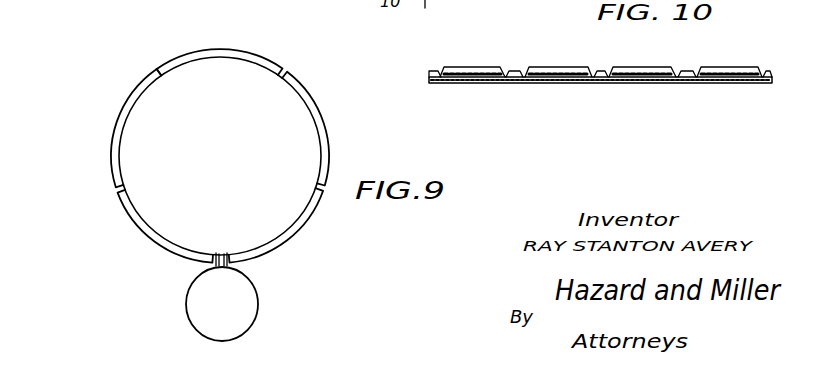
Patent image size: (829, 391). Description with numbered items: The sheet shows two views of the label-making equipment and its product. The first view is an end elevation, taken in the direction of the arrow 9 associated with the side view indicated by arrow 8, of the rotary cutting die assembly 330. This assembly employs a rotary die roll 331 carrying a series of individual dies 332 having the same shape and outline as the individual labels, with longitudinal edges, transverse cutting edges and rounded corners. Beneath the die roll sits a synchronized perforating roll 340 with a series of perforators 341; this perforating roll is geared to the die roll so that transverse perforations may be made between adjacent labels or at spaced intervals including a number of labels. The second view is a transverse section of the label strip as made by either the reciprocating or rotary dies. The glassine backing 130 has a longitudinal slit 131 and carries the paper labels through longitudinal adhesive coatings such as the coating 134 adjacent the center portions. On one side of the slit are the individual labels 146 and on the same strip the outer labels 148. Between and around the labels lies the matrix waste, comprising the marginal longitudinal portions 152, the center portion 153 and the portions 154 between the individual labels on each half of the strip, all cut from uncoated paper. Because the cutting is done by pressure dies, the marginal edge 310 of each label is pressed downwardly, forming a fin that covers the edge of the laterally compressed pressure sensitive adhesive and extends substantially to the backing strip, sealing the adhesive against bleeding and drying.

In FIG. 9, the cutting die assembly 330 is at (122, 103).
In FIG. 9, the rotary die roll 331 is at (290, 116).
In FIG. 9, the individual dies 332 is at (252, 50).
In FIG. 9, the synchronized perforating roll 340 is at (246, 315).
In FIG. 9, the perforators 341 is at (218, 267).
In FIG. 9, the arrow 8 is at (206, 35).
In FIG. 9, the arrow 9 is at (154, 0).
In FIG. 10, the marginal edge 310 is at (440, 71).
In FIG. 10, the backing 130 is at (459, 83).
In FIG. 10, the longitudinal slit 131 is at (599, 83).
In FIG. 10, the adhesive coating 134 is at (545, 83).
In FIG. 10, the individual labels 146 is at (542, 68).
In FIG. 10, the outer label 148 is at (477, 67).
In FIG. 10, the marginal longitudinal portions 152 is at (768, 72).
In FIG. 10, the center portion 153 is at (606, 71).
In FIG. 10, the portion between individual labels 154 is at (513, 71).